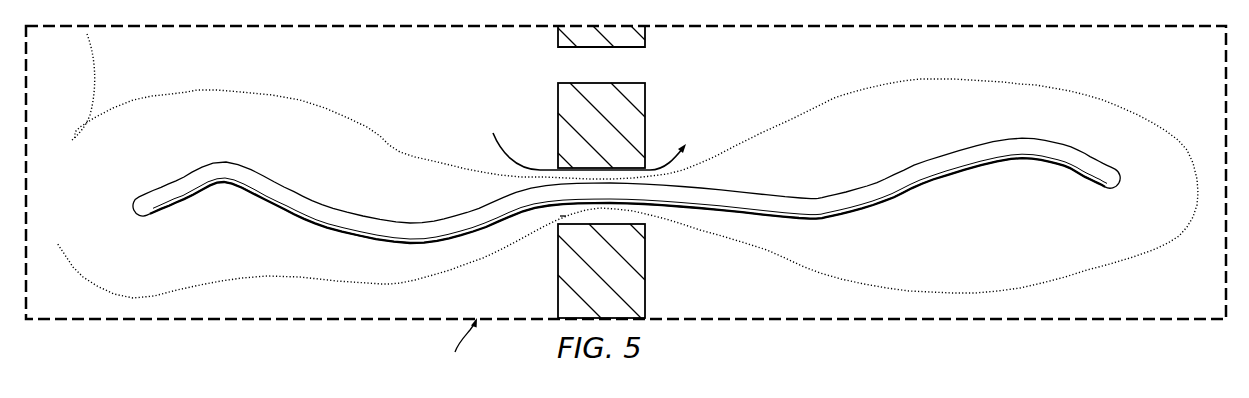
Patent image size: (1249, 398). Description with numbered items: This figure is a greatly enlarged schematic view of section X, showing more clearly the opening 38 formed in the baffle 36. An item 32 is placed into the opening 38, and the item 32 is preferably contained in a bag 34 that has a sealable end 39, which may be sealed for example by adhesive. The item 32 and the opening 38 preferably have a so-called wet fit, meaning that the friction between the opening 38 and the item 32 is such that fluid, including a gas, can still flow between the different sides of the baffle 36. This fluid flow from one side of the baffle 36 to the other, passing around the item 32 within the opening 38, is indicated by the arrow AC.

The item 32 is at (303, 212).
The bag 34 is at (1083, 97).
The baffle 36 is at (557, 100).
The opening 38 is at (563, 220).
The sealable end 39 is at (62, 199).
The arrow AC is at (582, 141).
The section X is at (463, 345).